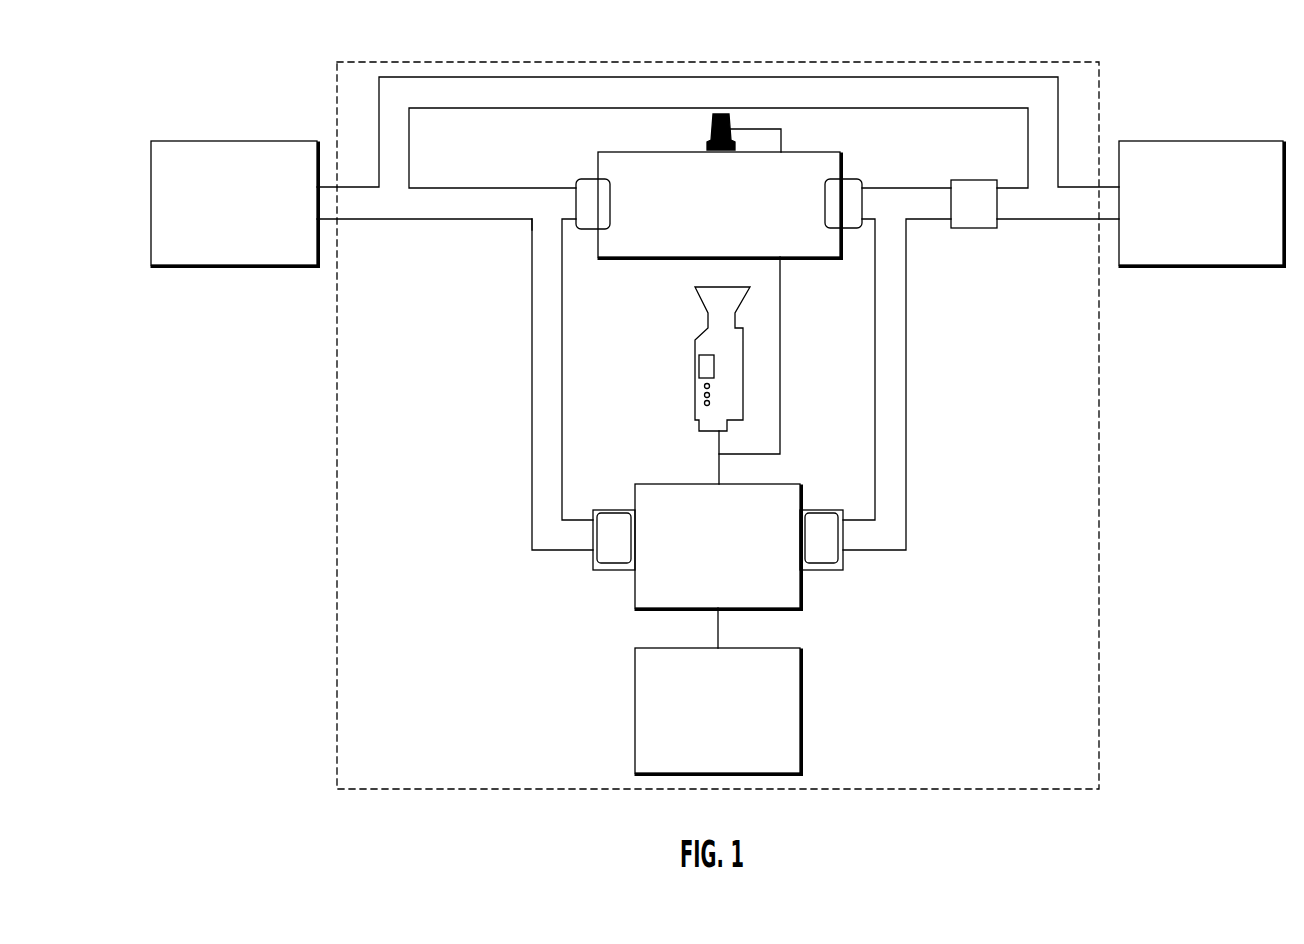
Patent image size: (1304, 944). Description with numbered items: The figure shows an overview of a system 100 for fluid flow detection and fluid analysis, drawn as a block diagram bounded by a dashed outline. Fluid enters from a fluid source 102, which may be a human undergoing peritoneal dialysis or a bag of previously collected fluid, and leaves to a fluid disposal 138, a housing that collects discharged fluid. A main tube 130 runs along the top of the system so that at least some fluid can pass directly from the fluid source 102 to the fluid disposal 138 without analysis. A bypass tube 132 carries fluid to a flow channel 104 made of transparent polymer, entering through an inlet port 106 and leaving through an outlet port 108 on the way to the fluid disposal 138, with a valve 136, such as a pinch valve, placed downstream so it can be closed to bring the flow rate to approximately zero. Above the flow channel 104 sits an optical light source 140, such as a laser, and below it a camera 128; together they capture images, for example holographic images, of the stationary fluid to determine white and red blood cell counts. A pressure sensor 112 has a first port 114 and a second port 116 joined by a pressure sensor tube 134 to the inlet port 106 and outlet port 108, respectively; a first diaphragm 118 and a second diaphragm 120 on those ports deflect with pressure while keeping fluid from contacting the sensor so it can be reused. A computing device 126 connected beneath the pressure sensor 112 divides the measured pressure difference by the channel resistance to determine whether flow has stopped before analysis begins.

The system 100 is at (421, 61).
The fluid source 102 is at (217, 237).
The flow channel 104 is at (701, 237).
The inlet port 106 is at (587, 178).
The outlet port 108 is at (849, 178).
The pressure sensor 112 is at (701, 587).
The first port 114 is at (612, 548).
The second port 116 is at (826, 548).
The first diaphragm 118 is at (614, 572).
The second diaphragm 120 is at (826, 572).
The computing device 126 is at (701, 752).
The camera 128 is at (695, 388).
The main tube 130 is at (497, 109).
The bypass tube 132 is at (453, 219).
The pressure sensor tube 134 is at (532, 398).
The valve 136 is at (972, 229).
The fluid disposal 138 is at (1185, 237).
The optical light source 140 is at (708, 142).